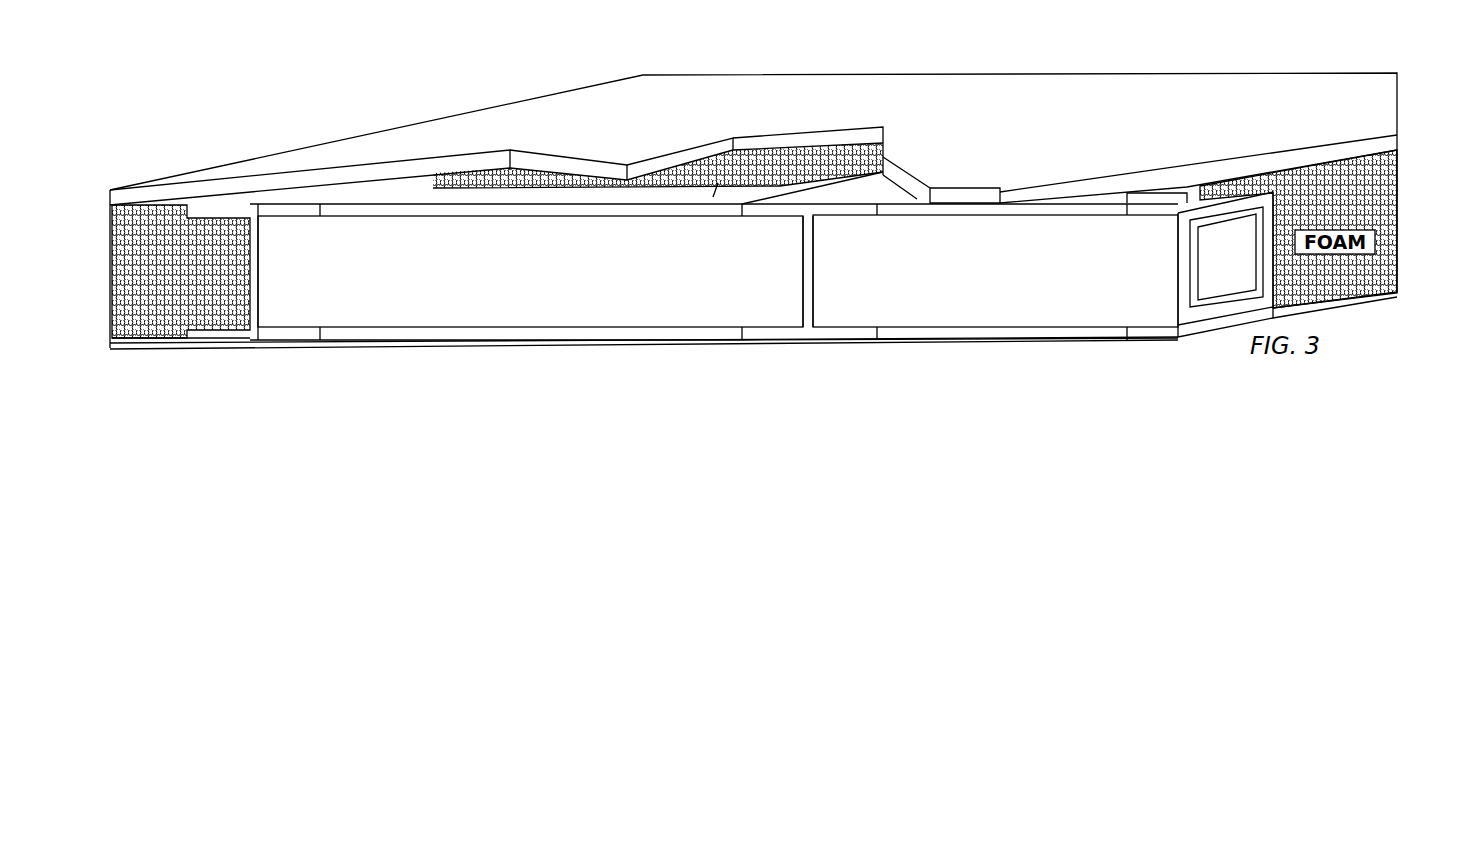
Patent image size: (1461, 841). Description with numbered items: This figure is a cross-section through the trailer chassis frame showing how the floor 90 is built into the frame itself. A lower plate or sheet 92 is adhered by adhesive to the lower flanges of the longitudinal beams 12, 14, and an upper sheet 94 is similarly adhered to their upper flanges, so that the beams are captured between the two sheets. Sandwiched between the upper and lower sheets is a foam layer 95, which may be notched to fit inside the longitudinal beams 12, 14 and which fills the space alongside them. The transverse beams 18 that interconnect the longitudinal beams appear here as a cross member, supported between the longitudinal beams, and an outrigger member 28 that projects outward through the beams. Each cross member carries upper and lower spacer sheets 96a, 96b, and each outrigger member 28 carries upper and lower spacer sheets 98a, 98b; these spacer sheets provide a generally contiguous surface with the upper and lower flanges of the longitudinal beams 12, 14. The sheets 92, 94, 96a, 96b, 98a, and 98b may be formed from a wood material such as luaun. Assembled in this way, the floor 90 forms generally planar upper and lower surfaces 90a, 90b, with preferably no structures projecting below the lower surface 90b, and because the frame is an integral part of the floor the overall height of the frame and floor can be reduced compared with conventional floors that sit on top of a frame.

The longitudinal beam 12 is at (254, 344).
The longitudinal beam 14 is at (846, 341).
The transverse beams 18 is at (619, 329).
The outrigger member 28 is at (1125, 303).
The floor 90 is at (1289, 96).
The upper surface 90a is at (333, 158).
The lower surface 90b is at (373, 348).
The lower plate or sheet 92 is at (782, 340).
The upper sheet 94 is at (1343, 105).
The foam layer 95 is at (247, 260).
The upper spacer sheet 96a is at (733, 150).
The lower spacer sheet 96b is at (693, 332).
The upper spacer sheet 98a is at (1113, 207).
The lower spacer sheet 98b is at (1072, 343).